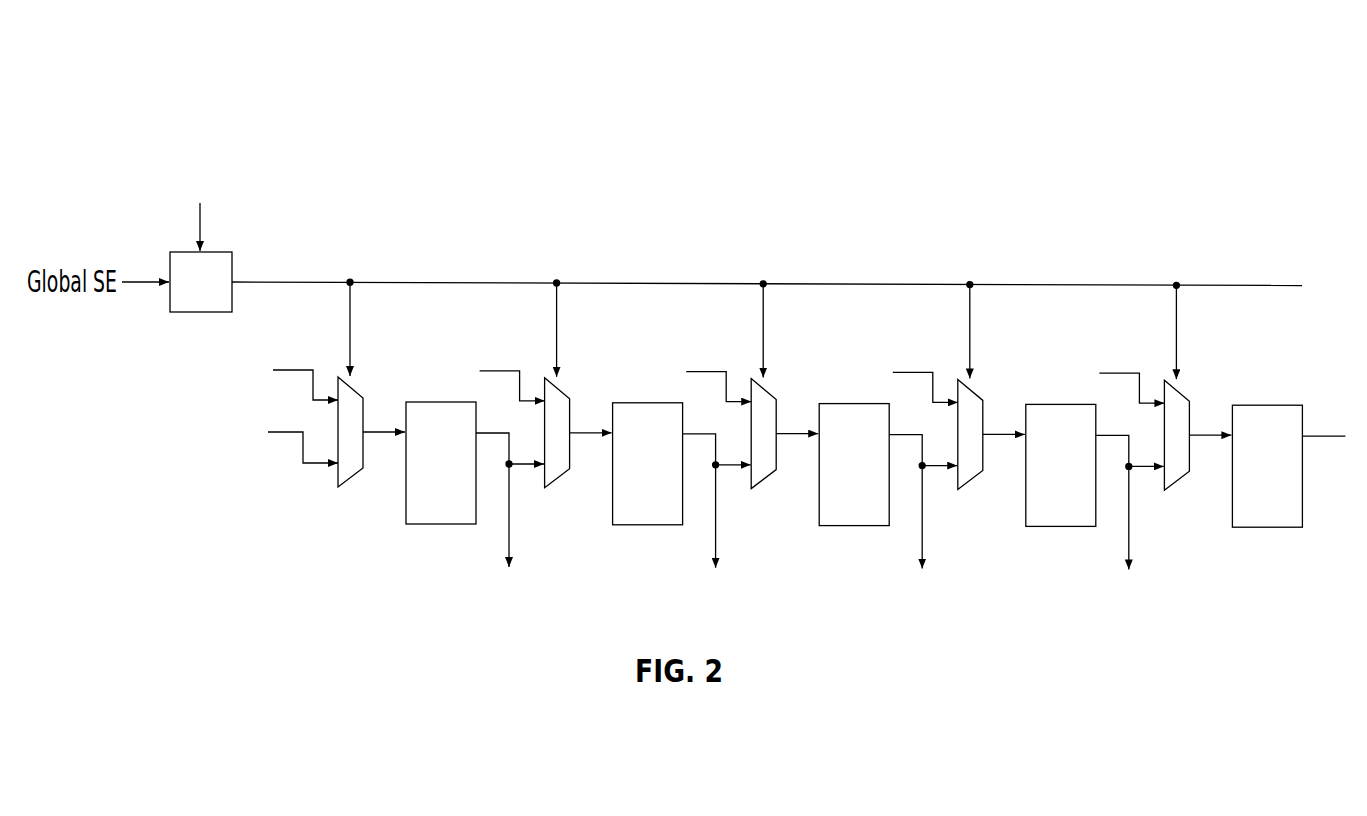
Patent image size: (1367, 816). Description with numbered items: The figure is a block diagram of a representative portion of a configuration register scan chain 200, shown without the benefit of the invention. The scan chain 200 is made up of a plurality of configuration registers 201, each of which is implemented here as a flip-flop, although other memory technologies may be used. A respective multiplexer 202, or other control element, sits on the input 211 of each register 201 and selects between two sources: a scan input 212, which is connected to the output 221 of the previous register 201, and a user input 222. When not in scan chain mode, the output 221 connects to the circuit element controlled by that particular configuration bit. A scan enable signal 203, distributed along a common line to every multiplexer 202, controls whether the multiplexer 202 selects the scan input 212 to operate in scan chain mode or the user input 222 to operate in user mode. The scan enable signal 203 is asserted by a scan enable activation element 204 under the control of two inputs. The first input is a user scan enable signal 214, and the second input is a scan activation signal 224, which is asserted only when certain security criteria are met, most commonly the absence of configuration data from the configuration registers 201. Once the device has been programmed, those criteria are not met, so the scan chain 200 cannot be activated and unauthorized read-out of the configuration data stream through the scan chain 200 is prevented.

The configuration register scan chain 200 is at (121, 122).
The configuration register 201 is at (440, 525).
The multiplexer 202 is at (348, 477).
The scan enable signal 203 is at (277, 281).
The scan enable activation element 204 is at (193, 313).
The input 211 is at (378, 425).
The scan input 212 is at (310, 468).
The user scan enable signal 214 is at (147, 282).
The output 221 is at (510, 540).
The user input 222 is at (295, 368).
The scan activation signal 224 is at (202, 230).